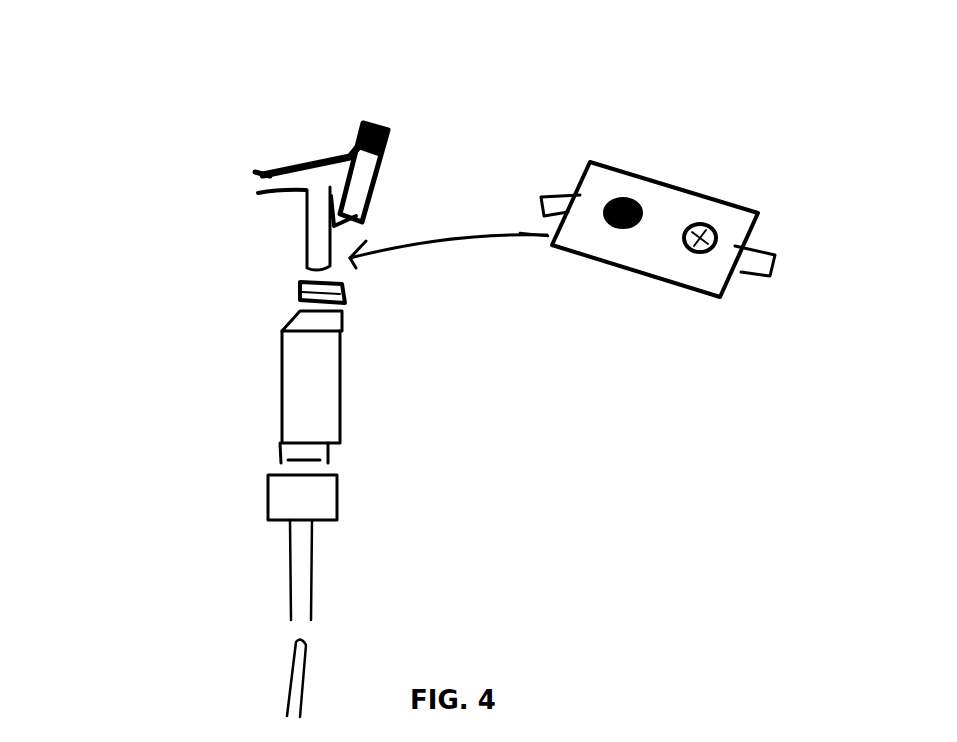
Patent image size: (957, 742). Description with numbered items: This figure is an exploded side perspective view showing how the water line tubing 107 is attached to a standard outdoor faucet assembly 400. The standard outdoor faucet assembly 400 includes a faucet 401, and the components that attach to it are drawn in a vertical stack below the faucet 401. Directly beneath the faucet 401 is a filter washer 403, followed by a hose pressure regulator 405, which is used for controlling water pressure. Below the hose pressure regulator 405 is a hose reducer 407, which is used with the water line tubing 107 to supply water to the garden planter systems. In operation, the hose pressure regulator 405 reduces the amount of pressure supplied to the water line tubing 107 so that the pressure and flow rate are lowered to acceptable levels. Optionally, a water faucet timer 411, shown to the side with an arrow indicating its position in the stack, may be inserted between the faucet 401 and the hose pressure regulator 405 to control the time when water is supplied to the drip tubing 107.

The standard outdoor faucet assembly 400 is at (120, 482).
The faucet 401 is at (308, 168).
The filter washer 403 is at (306, 283).
The hose pressure regulator 405 is at (280, 358).
The hose reducer 407 is at (268, 498).
The water faucet timer 411 is at (683, 191).
The water line tubing 107 is at (307, 667).